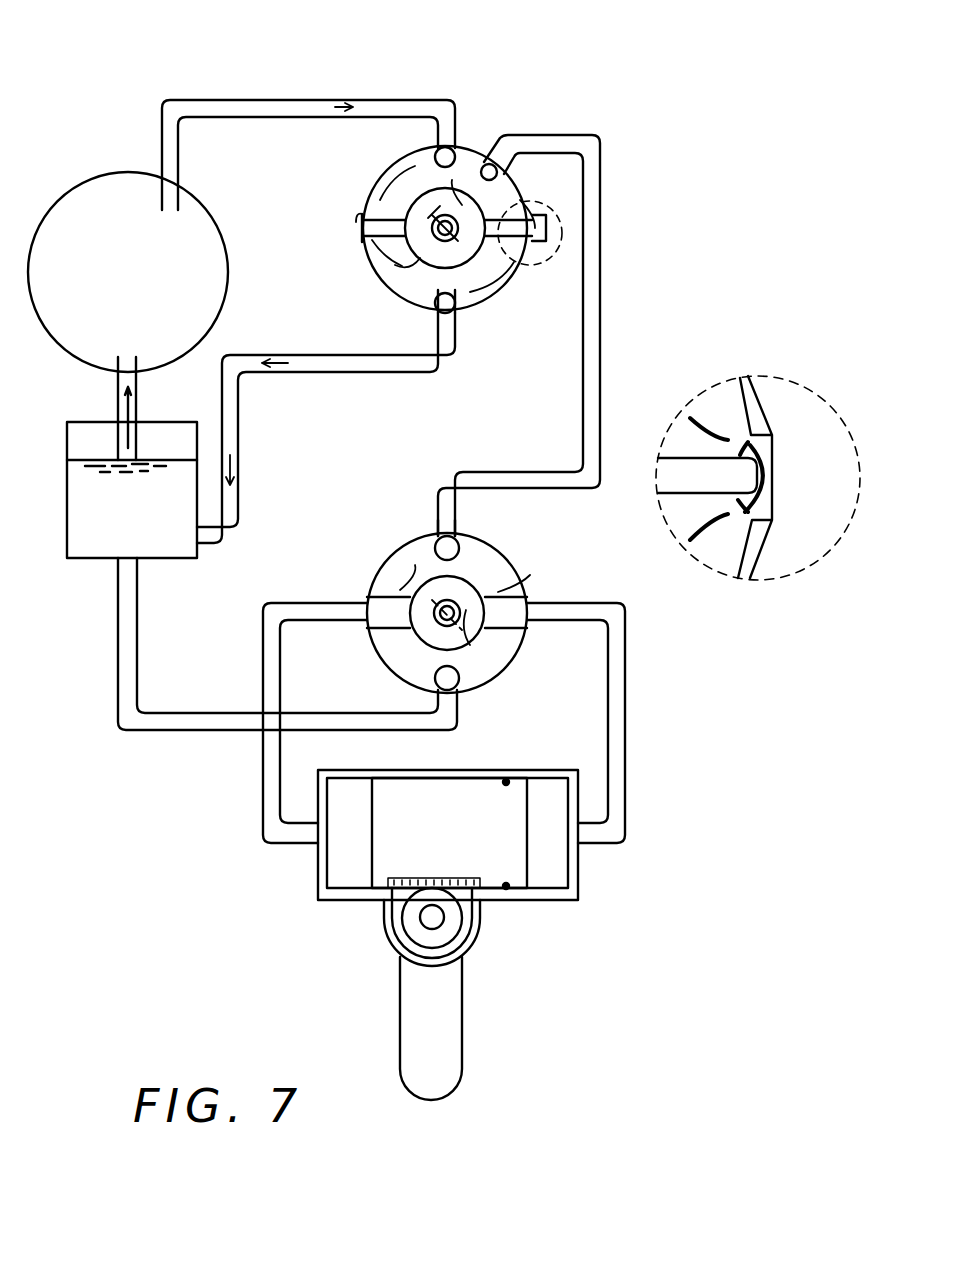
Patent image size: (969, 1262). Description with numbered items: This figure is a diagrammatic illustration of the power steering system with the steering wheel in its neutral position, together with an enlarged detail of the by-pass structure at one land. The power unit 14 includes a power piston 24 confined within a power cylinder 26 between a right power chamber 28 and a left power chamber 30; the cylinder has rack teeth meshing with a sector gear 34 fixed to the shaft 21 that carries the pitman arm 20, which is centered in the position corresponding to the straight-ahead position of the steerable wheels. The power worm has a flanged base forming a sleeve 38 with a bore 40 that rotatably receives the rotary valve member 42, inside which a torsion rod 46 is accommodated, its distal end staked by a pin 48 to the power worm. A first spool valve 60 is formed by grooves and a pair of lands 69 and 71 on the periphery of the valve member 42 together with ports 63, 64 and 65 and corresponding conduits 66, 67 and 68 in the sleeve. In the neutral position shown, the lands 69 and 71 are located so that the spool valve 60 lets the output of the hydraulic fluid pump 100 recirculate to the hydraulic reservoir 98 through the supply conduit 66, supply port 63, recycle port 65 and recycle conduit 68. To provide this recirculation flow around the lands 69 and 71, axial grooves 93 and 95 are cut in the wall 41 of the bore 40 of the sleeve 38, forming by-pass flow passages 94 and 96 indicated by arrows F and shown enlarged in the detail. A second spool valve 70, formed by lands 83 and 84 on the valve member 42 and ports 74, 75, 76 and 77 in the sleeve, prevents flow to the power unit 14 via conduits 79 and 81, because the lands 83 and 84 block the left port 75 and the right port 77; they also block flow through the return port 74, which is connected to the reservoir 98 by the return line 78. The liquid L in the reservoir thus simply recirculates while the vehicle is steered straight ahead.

In FIG. 7, the power unit 14 is at (622, 860).
In FIG. 7, the pitman arm 20 is at (445, 1036).
In FIG. 7, the pitman arm shaft 21 is at (425, 920).
In FIG. 7, the power piston 24 is at (449, 833).
In FIG. 7, the power cylinder 26 is at (556, 905).
In FIG. 7, the right power chamber 28 is at (555, 878).
In FIG. 7, the left power chamber 30 is at (335, 878).
In FIG. 7, the sector gear 34 is at (454, 930).
In FIG. 7A, the sleeve 38 is at (800, 415).
In FIG. 7A, the bore 40 is at (718, 405).
In FIG. 7A, the wall of bore 41 is at (735, 395).
In FIG. 7, the rotary valve member 42 is at (438, 312).
In FIG. 7, the torsion rod 46 is at (395, 290).
In FIG. 7, the pin 48 is at (472, 148).
In FIG. 7, the first spool valve 60 is at (471, 184).
In FIG. 7, the supply port 63 is at (420, 175).
In FIG. 7, the port 64 is at (500, 180).
In FIG. 7, the recycle port 65 is at (462, 320).
In FIG. 7, the supply conduit 66 is at (348, 95).
In FIG. 7, the conduit 67 is at (582, 410).
In FIG. 7, the recycle conduit 68 is at (352, 372).
In FIG. 7, the land 69 is at (400, 262).
In FIG. 7, the second spool valve 70 is at (478, 609).
In FIG. 7, the land 71 is at (508, 282).
In FIG. 7A, the land 71 is at (692, 485).
In FIG. 7, the return port 74 is at (462, 690).
In FIG. 7, the left port 75 is at (350, 604).
In FIG. 7, the port 76 is at (490, 534).
In FIG. 7, the right port 77 is at (536, 630).
In FIG. 7, the return line 78 is at (180, 735).
In FIG. 7, the conduit 79 is at (282, 688).
In FIG. 7, the conduit 81 is at (628, 672).
In FIG. 7, the land 83 is at (388, 588).
In FIG. 7, the land 84 is at (526, 598).
In FIG. 7, the axial groove 93 is at (356, 236).
In FIG. 7, the by-pass flow passage 94 is at (360, 218).
In FIG. 7, the axial groove 95 is at (560, 250).
In FIG. 7A, the axial groove 95 is at (776, 446).
In FIG. 7, the by-pass flow passage 96 is at (548, 210).
In FIG. 7A, the by-pass flow passage 96 is at (752, 380).
In FIG. 7, the hydraulic reservoir 98 is at (168, 565).
In FIG. 7, the hydraulic fluid pump 100 is at (128, 272).
In FIG. 7, the liquid L is at (78, 545).
In FIG. 7A, the arrows F is at (778, 505).